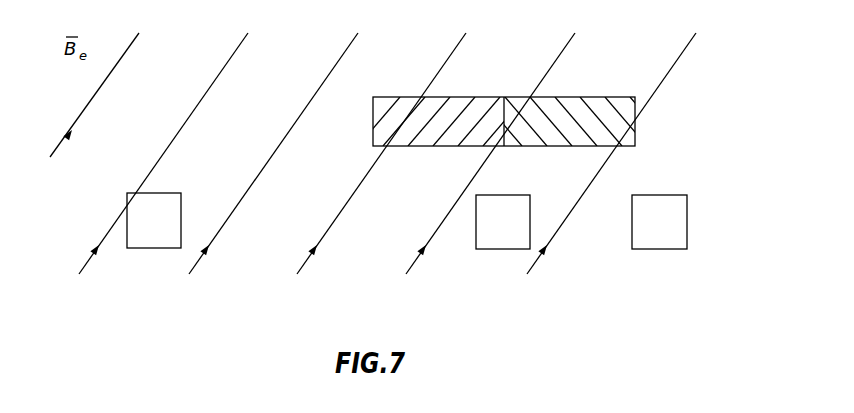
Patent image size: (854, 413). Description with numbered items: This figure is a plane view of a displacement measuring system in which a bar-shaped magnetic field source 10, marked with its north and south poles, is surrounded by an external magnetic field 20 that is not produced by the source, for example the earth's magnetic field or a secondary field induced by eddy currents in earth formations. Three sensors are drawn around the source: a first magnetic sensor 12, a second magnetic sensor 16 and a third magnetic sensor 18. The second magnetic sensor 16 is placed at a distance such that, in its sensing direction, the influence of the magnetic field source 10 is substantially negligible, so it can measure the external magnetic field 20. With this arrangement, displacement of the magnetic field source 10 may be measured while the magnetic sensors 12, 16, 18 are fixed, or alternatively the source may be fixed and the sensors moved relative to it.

The magnetic field source 10 is at (578, 108).
The first magnetic sensor 12 is at (700, 214).
The second magnetic sensor 16 is at (186, 195).
The third magnetic sensor 18 is at (537, 209).
The external magnetic field 20 is at (122, 81).